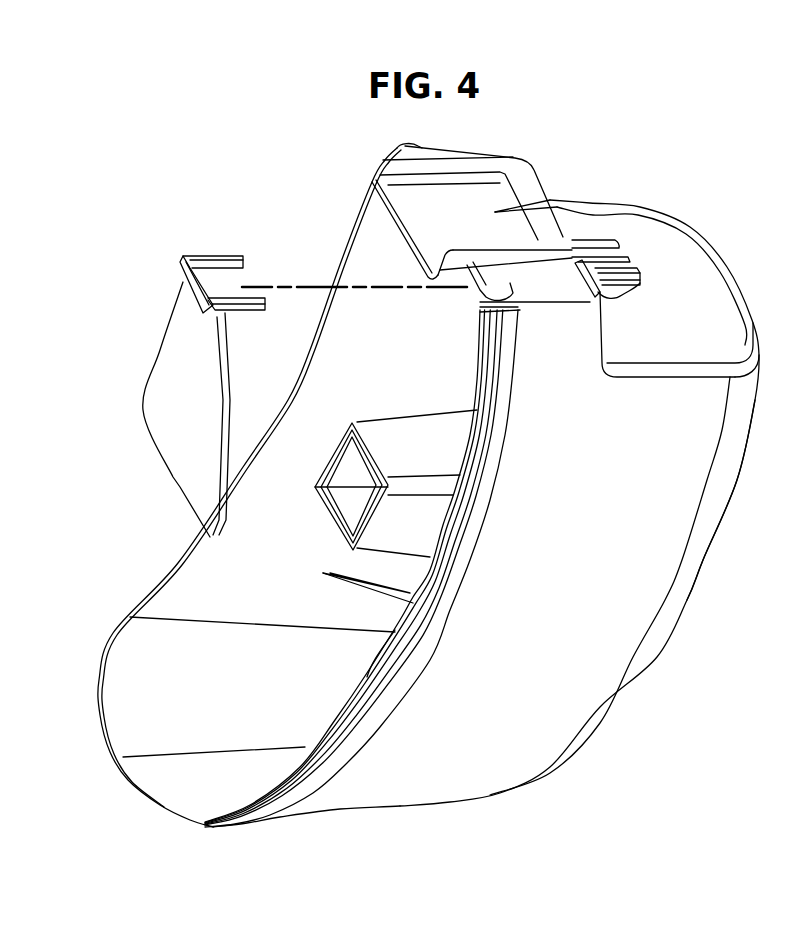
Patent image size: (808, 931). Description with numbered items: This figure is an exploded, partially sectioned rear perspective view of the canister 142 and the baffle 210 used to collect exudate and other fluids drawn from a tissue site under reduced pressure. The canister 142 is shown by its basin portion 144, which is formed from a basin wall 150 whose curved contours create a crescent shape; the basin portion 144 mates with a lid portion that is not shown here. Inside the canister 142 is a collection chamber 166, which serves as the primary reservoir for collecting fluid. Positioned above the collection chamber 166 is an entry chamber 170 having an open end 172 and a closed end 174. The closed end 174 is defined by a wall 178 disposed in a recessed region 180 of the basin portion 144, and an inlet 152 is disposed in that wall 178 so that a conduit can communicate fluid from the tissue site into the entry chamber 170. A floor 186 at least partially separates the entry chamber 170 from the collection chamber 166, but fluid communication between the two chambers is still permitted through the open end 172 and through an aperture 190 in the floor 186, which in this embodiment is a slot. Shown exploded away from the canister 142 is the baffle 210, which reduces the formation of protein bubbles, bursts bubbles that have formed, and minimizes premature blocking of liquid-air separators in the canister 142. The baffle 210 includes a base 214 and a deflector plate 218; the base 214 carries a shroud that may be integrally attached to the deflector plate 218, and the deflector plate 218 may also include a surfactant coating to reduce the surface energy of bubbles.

The canister 142 is at (708, 580).
The basin portion 144 is at (657, 657).
The basin wall 150 is at (427, 792).
The inlet 152 is at (637, 287).
The collection chamber 166 is at (205, 580).
The entry chamber 170 is at (508, 272).
The open end 172 is at (444, 295).
The closed end 174 is at (571, 292).
The wall 178 is at (607, 293).
The recessed region 180 is at (640, 222).
The floor 186 is at (560, 252).
The aperture 190 is at (485, 298).
The baffle 210 is at (176, 238).
The base 214 is at (225, 258).
The deflector plate 218 is at (170, 440).